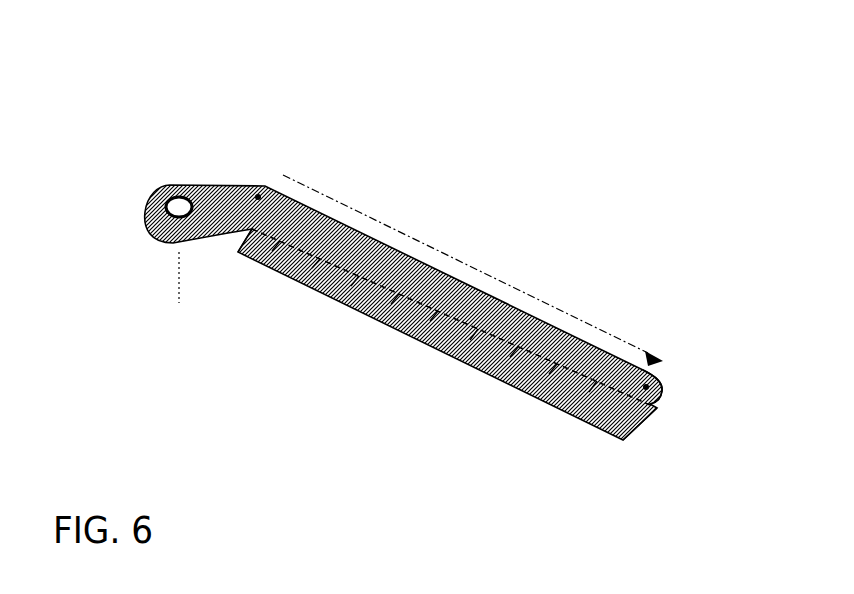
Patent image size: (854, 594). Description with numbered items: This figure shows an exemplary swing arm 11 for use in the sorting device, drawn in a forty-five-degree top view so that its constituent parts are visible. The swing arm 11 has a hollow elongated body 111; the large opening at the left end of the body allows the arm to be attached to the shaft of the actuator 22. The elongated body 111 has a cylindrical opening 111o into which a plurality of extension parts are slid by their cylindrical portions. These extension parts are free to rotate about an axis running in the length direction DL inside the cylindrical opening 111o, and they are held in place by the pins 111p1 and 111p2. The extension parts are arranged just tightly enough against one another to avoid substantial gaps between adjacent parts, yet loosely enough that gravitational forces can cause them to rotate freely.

The swing arm 11 is at (391, 307).
The hollow elongated body 111 is at (404, 307).
The pin 111p1 is at (258, 194).
The pin 111p2 is at (631, 366).
The cylindrical opening 111o is at (663, 405).
The actuator 22 is at (172, 277).
The length direction DL is at (473, 270).